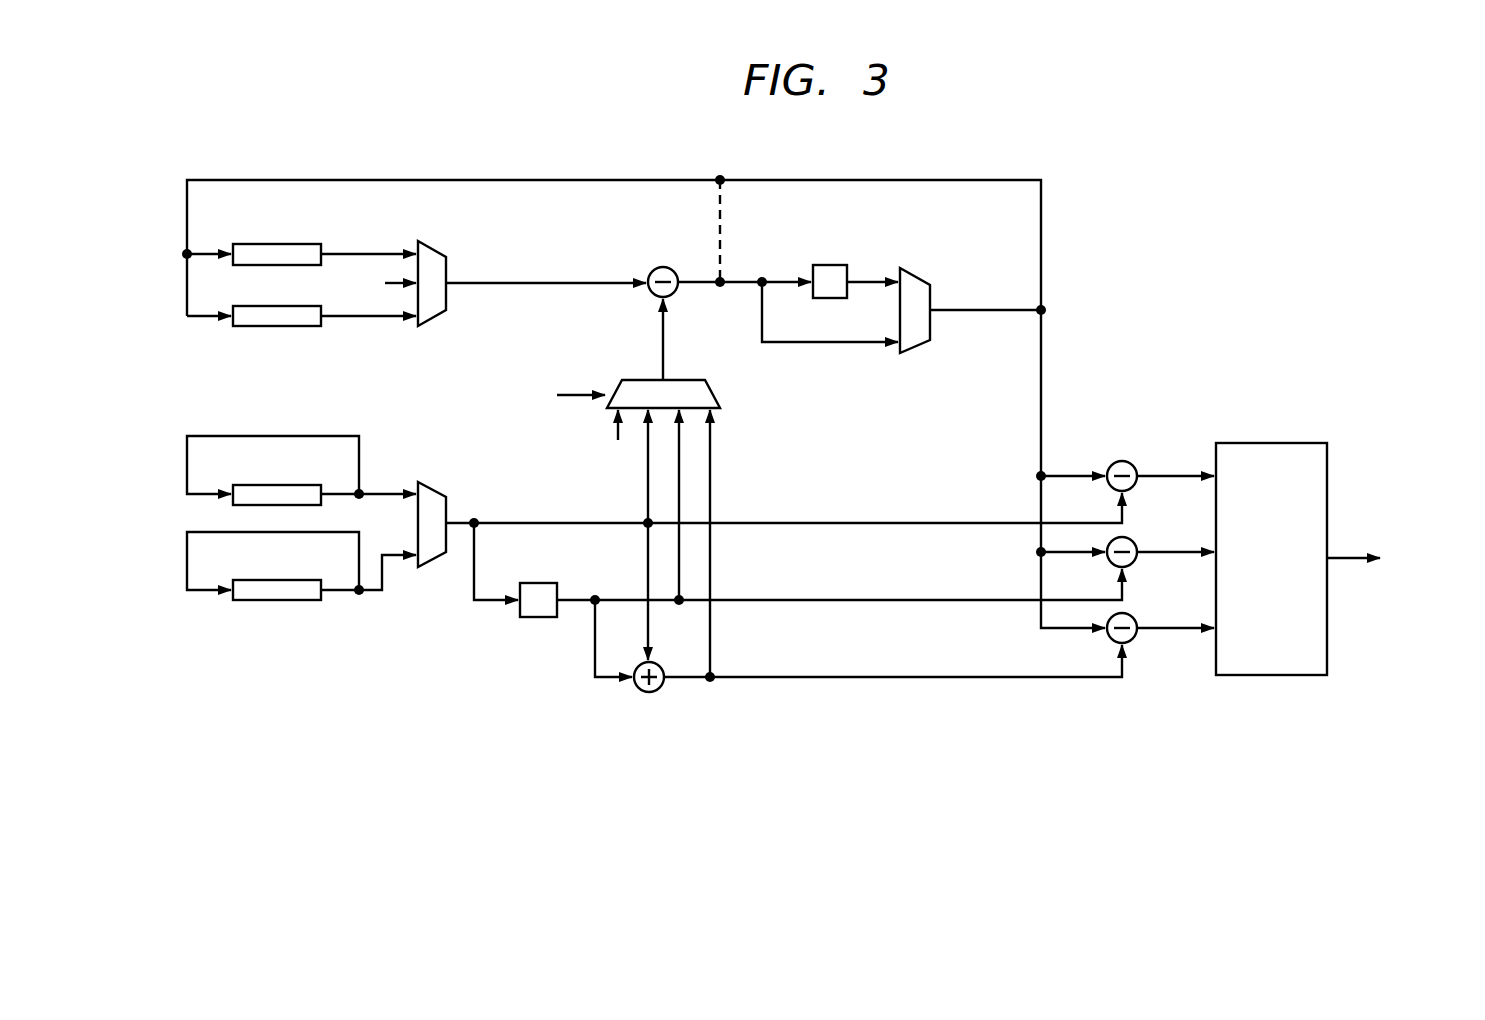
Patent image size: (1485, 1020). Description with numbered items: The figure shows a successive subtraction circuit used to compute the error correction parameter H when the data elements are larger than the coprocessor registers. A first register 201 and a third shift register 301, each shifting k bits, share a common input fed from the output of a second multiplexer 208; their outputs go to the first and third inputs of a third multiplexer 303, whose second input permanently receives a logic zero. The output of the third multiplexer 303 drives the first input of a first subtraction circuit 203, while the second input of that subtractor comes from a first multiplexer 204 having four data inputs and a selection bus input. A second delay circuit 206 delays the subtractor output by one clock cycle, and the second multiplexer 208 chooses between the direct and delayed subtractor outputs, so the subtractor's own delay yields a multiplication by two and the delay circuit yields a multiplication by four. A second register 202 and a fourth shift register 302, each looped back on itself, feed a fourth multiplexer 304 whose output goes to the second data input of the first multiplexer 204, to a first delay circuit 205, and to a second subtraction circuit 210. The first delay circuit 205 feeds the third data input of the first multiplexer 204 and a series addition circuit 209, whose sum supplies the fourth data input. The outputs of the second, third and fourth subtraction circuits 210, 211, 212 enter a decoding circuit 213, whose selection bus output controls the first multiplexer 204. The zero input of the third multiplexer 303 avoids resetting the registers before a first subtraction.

The first register 201 is at (281, 245).
The third shift register 301 is at (277, 327).
The third multiplexer 303 is at (431, 326).
The first subtraction circuit 203 is at (664, 266).
The first multiplexer 204 is at (706, 386).
The second delay circuit 206 is at (831, 265).
The second multiplexer 208 is at (920, 278).
The second register 202 is at (282, 485).
The fourth shift register 302 is at (277, 601).
The fourth multiplexer 304 is at (430, 482).
The first delay circuit 205 is at (538, 617).
The series addition circuit 209 is at (650, 692).
The second subtraction circuit 210 is at (1121, 461).
The third subtraction circuit 211 is at (1134, 544).
The fourth subtraction circuit 212 is at (1134, 620).
The decoding circuit 213 is at (1270, 443).